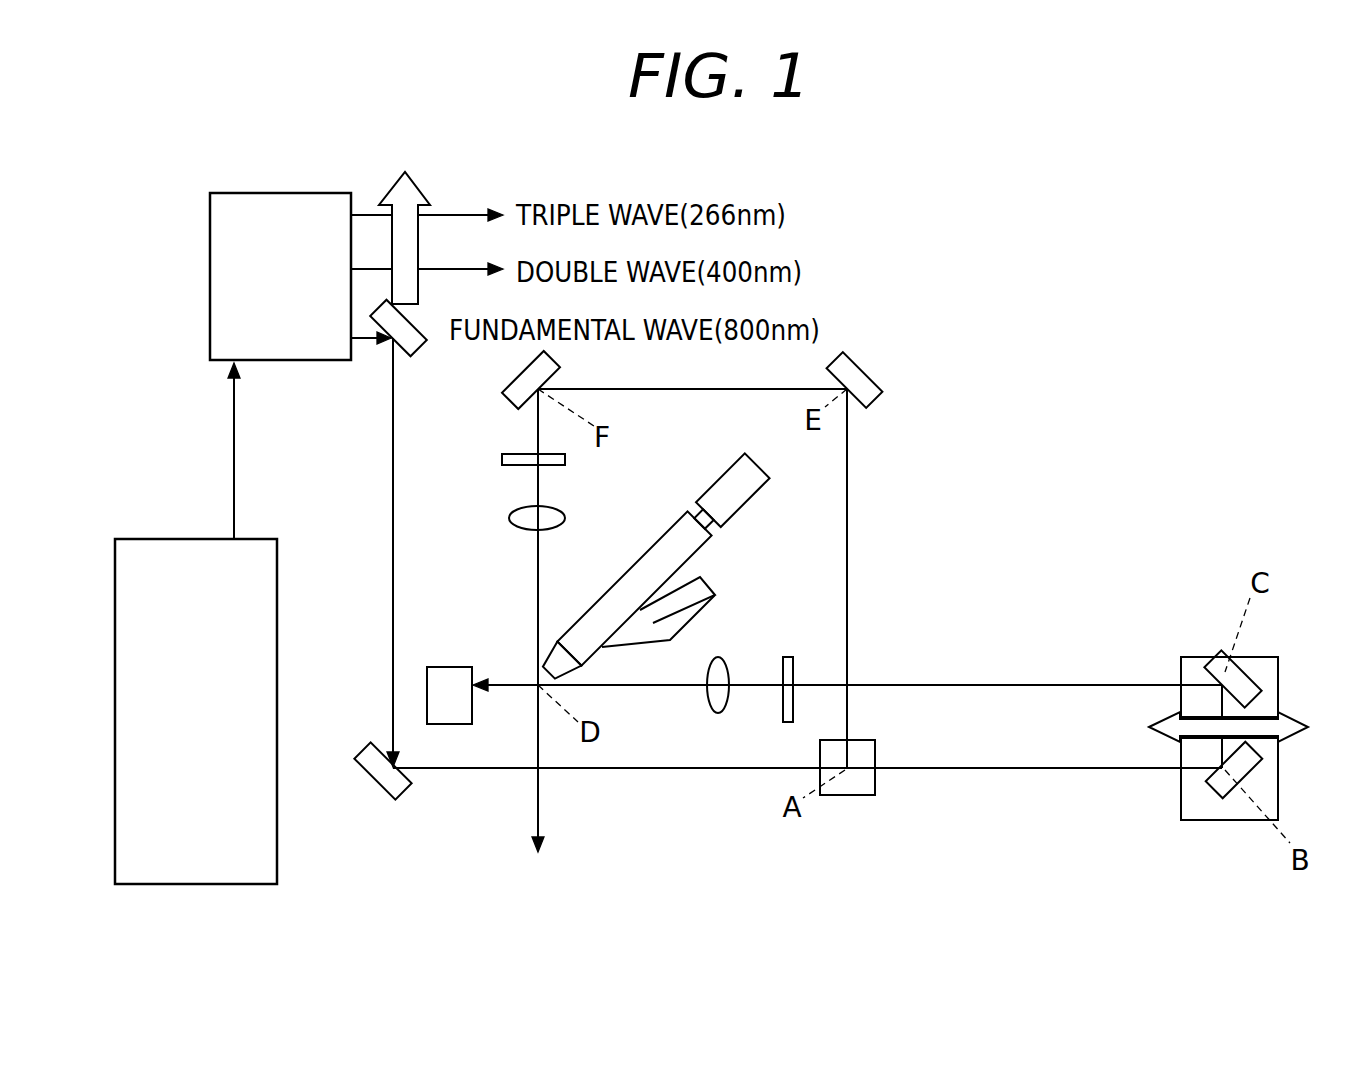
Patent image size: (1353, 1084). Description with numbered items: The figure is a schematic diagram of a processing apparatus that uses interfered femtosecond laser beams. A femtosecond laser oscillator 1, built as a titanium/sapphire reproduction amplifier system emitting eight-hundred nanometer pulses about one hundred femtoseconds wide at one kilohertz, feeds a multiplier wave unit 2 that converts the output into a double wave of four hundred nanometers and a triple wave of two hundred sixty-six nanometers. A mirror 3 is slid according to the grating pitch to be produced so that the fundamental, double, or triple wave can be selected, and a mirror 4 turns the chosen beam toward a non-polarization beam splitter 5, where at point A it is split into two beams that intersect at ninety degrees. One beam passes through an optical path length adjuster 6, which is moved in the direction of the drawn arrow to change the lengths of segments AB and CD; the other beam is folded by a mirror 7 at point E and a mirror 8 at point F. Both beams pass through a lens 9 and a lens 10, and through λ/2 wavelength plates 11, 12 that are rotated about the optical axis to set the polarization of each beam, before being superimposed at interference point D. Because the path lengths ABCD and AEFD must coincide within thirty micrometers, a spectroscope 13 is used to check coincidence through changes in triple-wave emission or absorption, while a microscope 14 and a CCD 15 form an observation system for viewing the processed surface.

The femtosecond laser oscillator 1 is at (180, 708).
The multiplier wave unit 2 is at (264, 288).
The mirror 3 is at (410, 353).
The mirror 4 is at (400, 798).
The beam splitter 5 is at (875, 749).
The optical path length adjuster 6 is at (1190, 657).
The mirror 7 is at (866, 408).
The mirror 8 is at (511, 401).
The lens 9 is at (512, 516).
The lens 10 is at (720, 656).
The wavelength plate 11 is at (788, 656).
The wavelength plate 12 is at (504, 459).
The spectroscope 13 is at (450, 667).
The microscope 14 is at (641, 556).
The CCD 15 is at (720, 475).